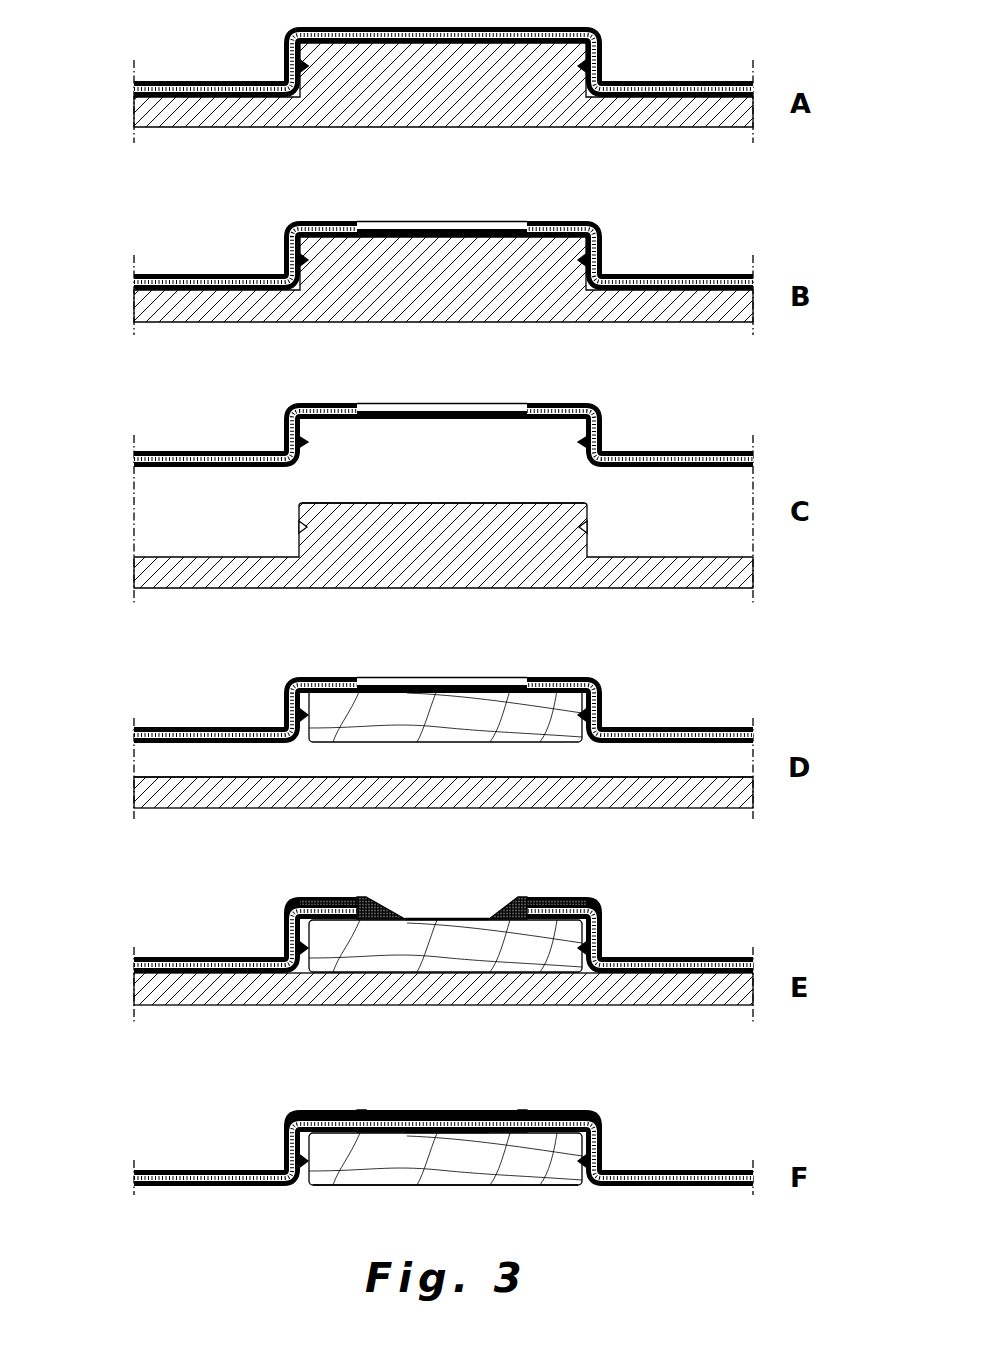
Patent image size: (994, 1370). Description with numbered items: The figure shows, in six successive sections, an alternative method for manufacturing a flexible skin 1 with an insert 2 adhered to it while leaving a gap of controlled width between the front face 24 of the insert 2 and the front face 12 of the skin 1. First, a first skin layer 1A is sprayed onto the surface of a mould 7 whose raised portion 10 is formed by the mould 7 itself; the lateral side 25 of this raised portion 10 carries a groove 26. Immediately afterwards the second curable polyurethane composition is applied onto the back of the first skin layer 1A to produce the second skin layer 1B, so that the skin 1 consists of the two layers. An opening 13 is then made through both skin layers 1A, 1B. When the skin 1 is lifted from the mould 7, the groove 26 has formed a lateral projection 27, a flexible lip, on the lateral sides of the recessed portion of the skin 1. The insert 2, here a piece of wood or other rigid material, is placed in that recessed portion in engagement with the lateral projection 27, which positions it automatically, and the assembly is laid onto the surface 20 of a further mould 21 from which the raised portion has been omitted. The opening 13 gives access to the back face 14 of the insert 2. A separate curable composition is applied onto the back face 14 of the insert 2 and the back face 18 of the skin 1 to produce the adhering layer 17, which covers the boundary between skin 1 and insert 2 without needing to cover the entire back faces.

The flexible skin 1 is at (442, 604).
The first skin layer 1A is at (733, 95).
The second skin layer 1B is at (733, 81).
The mould 7 is at (555, 110).
The opening 13 is at (443, 223).
The lateral projection 27 is at (307, 441).
The lateral side 25 is at (293, 510).
The groove 26 is at (305, 528).
The raised portion 10 is at (420, 503).
The back face of the insert 14 is at (450, 690).
The insert 2 is at (503, 743).
The further mould surface 20 is at (613, 777).
The further mould 21 is at (613, 797).
The adhering layer 17 is at (383, 910).
The back face of the skin 18 is at (243, 1172).
The front face of the skin 12 is at (243, 1186).
The front face of the insert 24 is at (495, 1187).